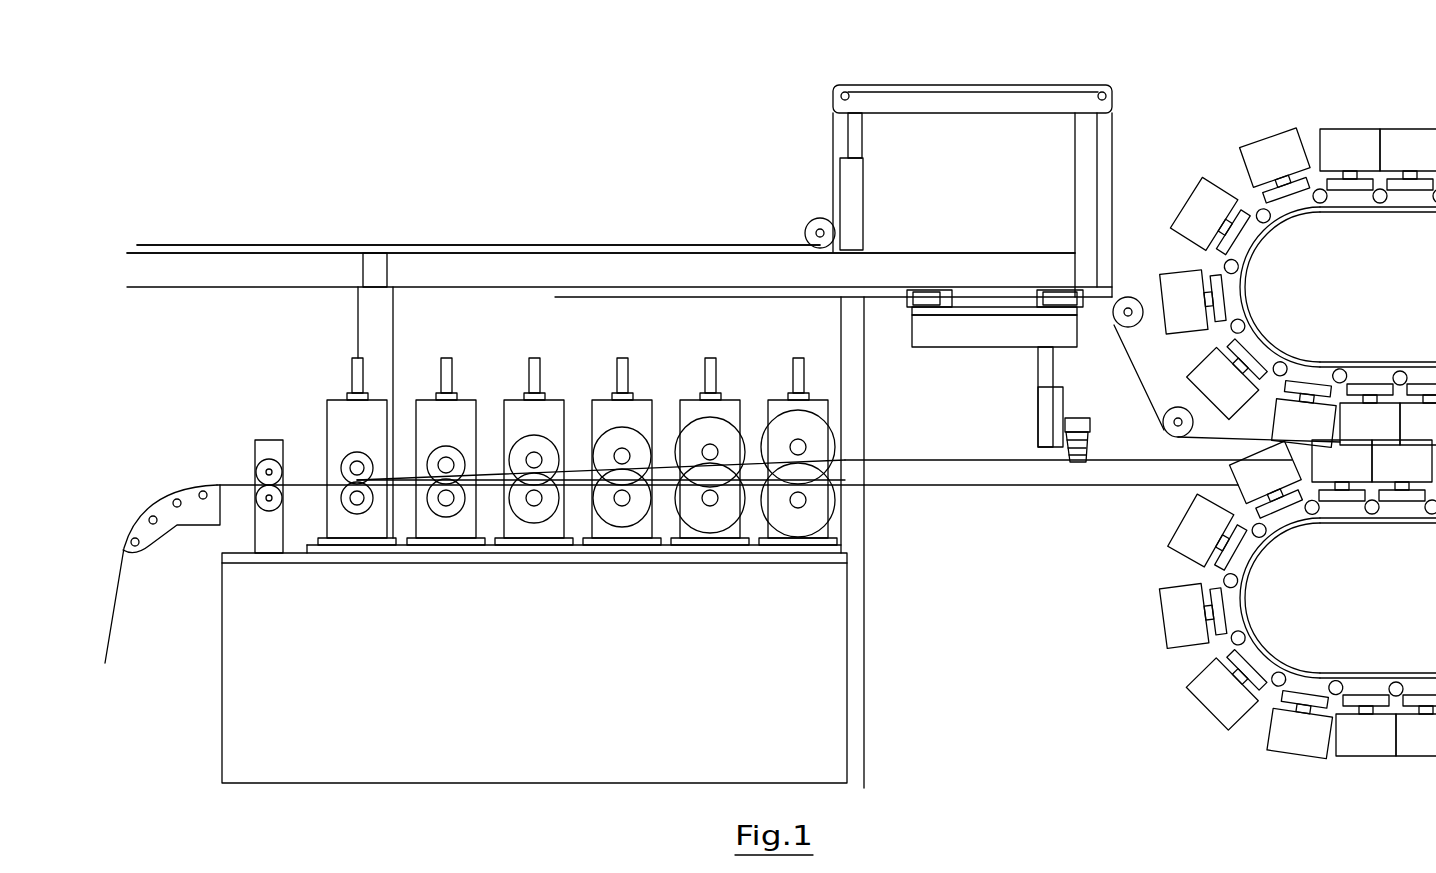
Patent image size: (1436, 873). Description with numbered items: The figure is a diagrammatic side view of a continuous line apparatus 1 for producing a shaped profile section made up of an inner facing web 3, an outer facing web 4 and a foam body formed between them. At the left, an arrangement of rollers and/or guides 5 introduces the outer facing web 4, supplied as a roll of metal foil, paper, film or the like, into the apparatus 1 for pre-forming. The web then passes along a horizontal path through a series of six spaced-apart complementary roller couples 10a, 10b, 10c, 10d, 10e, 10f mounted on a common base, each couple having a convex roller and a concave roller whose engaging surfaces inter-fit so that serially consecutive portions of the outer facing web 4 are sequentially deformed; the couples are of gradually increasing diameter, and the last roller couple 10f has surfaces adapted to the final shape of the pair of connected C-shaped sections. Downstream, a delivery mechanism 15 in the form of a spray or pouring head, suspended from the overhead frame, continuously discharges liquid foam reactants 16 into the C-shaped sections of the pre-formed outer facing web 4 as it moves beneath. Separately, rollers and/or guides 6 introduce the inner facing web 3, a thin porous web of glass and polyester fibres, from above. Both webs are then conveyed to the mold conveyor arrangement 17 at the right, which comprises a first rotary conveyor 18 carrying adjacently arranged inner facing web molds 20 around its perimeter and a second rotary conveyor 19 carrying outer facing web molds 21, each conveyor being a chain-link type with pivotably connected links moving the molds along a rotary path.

The line apparatus 1 is at (412, 166).
The inner facing web 3 is at (522, 247).
The outer facing web 4 is at (967, 482).
The rollers and/or guides 5 is at (255, 470).
The rollers and/or guides 6 is at (810, 225).
The complementary roller couple 10a is at (361, 538).
The complementary roller couple 10b is at (449, 540).
The complementary roller couple 10c is at (538, 545).
The complementary roller couple 10d is at (626, 545).
The complementary roller couple 10e is at (714, 552).
The last complementary roller couple 10f is at (801, 556).
The delivery mechanism 15 is at (1075, 424).
The liquid foam reactants 16 is at (1090, 457).
The mold conveyor arrangement 17 is at (1246, 417).
The first rotary conveyor 18 is at (1376, 300).
The second rotary conveyor 19 is at (1376, 616).
The inner facing web molds 20 is at (1266, 146).
The outer facing web molds 21 is at (1218, 712).